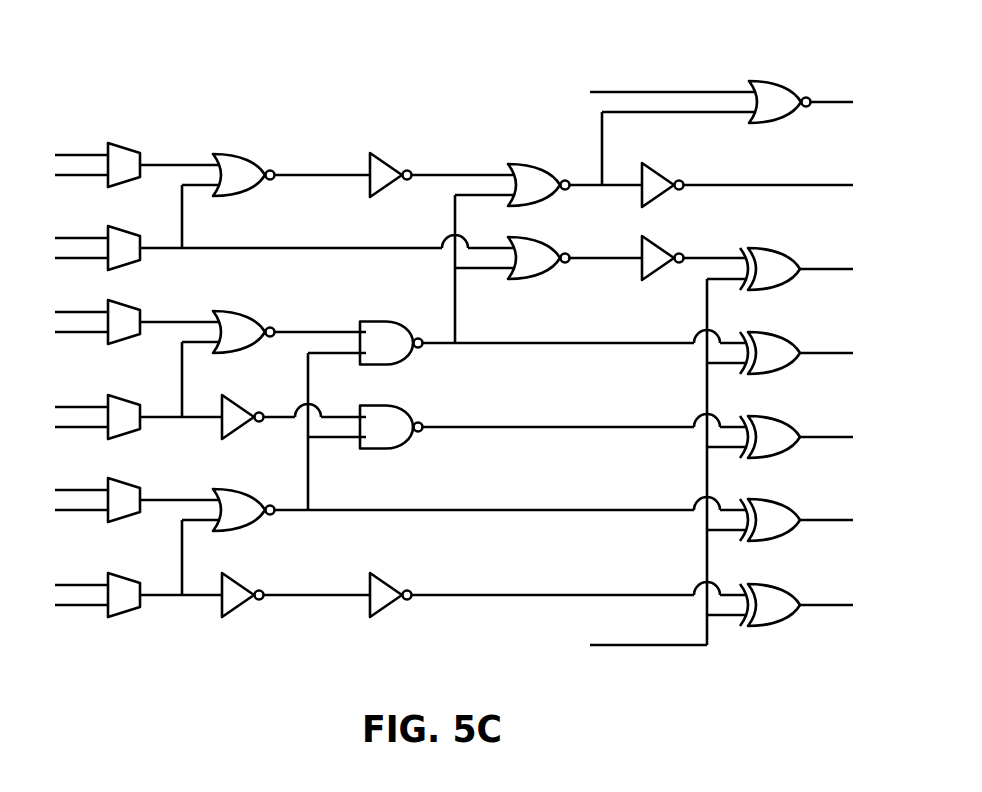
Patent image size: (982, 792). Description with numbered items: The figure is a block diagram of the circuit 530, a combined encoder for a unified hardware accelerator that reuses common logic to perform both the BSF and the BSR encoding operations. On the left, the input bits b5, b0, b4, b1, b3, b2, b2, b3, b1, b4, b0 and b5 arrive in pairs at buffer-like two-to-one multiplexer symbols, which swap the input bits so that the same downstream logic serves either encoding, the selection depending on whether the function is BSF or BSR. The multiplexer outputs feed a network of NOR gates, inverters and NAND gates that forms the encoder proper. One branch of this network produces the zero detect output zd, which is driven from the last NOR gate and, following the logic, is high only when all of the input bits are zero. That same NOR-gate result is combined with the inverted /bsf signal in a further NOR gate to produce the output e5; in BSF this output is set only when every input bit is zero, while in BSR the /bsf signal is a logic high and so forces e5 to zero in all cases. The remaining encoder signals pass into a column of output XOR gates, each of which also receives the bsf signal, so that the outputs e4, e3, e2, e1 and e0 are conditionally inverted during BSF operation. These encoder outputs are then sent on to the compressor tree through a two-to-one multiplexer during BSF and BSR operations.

The circuit 530 is at (158, 28).
The input bit b[0] b0 is at (65, 380).
The input bit b[1] b1 is at (65, 374).
The input bit b[2] b2 is at (65, 369).
The input bit b[3] b3 is at (65, 369).
The input bit b[4] b4 is at (65, 374).
The input bit b[5] b5 is at (65, 380).
The BSF signal bsf is at (647, 368).
The zero detect output zd is at (784, 185).
The encoder output e[0] e0 is at (812, 605).
The encoder output e[1] e1 is at (812, 520).
The encoder output e[2] e2 is at (812, 437).
The encoder output e[3] e3 is at (812, 353).
The encoder output e[4] e4 is at (812, 269).
The encoder output e[5] e5 is at (817, 102).